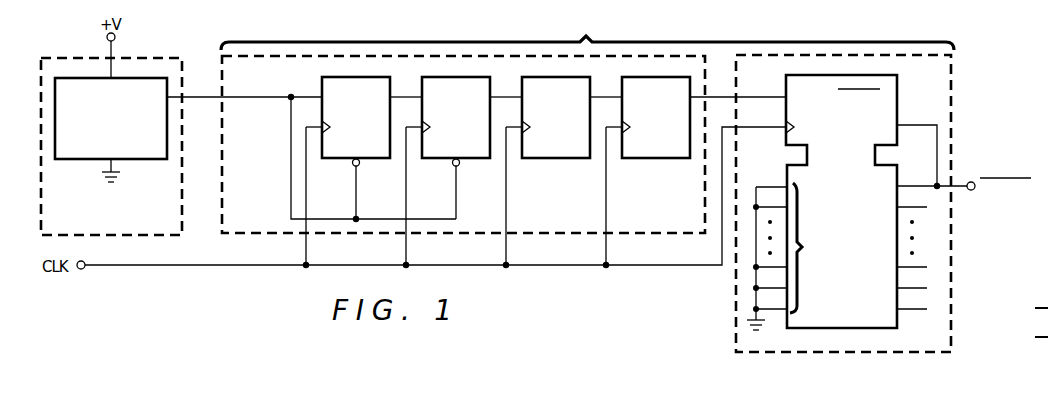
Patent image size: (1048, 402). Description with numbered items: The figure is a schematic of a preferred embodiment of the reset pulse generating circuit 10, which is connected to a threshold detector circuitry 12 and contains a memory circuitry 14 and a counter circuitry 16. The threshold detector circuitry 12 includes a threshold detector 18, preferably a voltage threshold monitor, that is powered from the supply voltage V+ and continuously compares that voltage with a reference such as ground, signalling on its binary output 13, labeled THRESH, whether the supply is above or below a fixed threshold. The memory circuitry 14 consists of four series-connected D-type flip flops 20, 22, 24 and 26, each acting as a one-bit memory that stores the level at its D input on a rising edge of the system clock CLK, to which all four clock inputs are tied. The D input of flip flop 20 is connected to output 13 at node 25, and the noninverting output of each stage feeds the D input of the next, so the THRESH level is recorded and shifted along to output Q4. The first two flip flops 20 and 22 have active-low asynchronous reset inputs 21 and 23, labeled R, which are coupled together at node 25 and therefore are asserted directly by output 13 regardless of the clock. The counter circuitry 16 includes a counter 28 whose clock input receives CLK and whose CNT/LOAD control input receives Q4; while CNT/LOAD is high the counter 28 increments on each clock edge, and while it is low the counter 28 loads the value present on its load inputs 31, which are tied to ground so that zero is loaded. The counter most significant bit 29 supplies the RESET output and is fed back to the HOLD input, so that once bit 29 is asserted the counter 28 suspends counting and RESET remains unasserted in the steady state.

The reset pulse generating circuit 10 is at (587, 30).
The threshold detector circuitry 12 is at (166, 210).
The binary output 13 is at (190, 98).
The memory circuitry 14 is at (266, 210).
The counter circuitry 16 is at (952, 100).
The threshold detector 18 is at (80, 160).
The flip flop 20 is at (340, 160).
The asynchronous reset input 21 is at (360, 166).
The flip flop 22 is at (440, 160).
The asynchronous reset input 23 is at (460, 166).
The flip flop 24 is at (555, 160).
The node 25 is at (286, 102).
The flip flop 26 is at (655, 160).
The counter 28 is at (854, 188).
The counter most significant bit 29 is at (906, 177).
The load inputs 31 is at (792, 256).